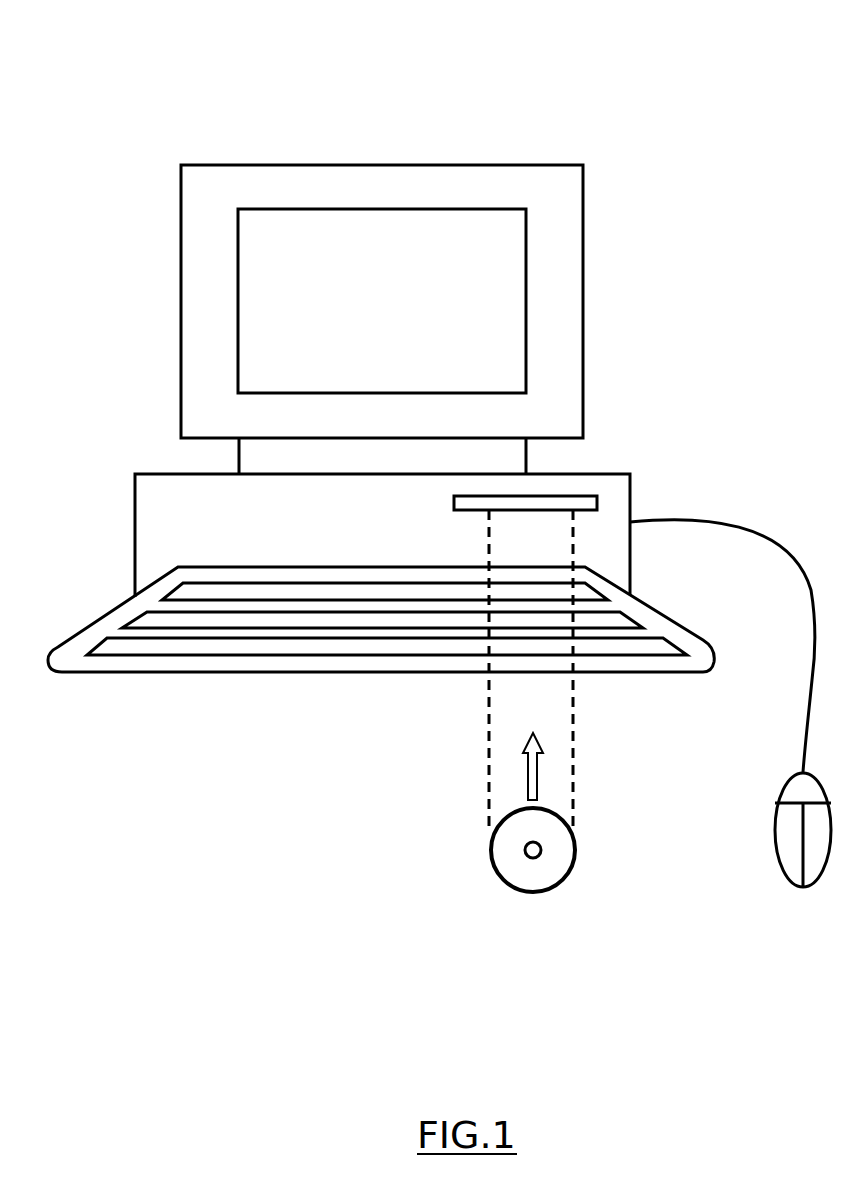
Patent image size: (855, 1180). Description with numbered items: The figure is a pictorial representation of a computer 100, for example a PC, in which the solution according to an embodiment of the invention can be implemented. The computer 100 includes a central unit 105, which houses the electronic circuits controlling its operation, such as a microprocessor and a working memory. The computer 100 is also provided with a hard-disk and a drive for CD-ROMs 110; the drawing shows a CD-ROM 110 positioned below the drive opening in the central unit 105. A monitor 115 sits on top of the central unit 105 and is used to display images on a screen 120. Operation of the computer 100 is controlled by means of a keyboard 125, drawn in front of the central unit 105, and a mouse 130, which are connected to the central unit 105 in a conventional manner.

The computer 100 is at (655, 56).
The central unit 105 is at (162, 474).
The CD-ROMs 110 is at (505, 815).
The monitor 115 is at (282, 165).
The screen 120 is at (500, 257).
The keyboard 125 is at (203, 672).
The mouse 130 is at (786, 783).